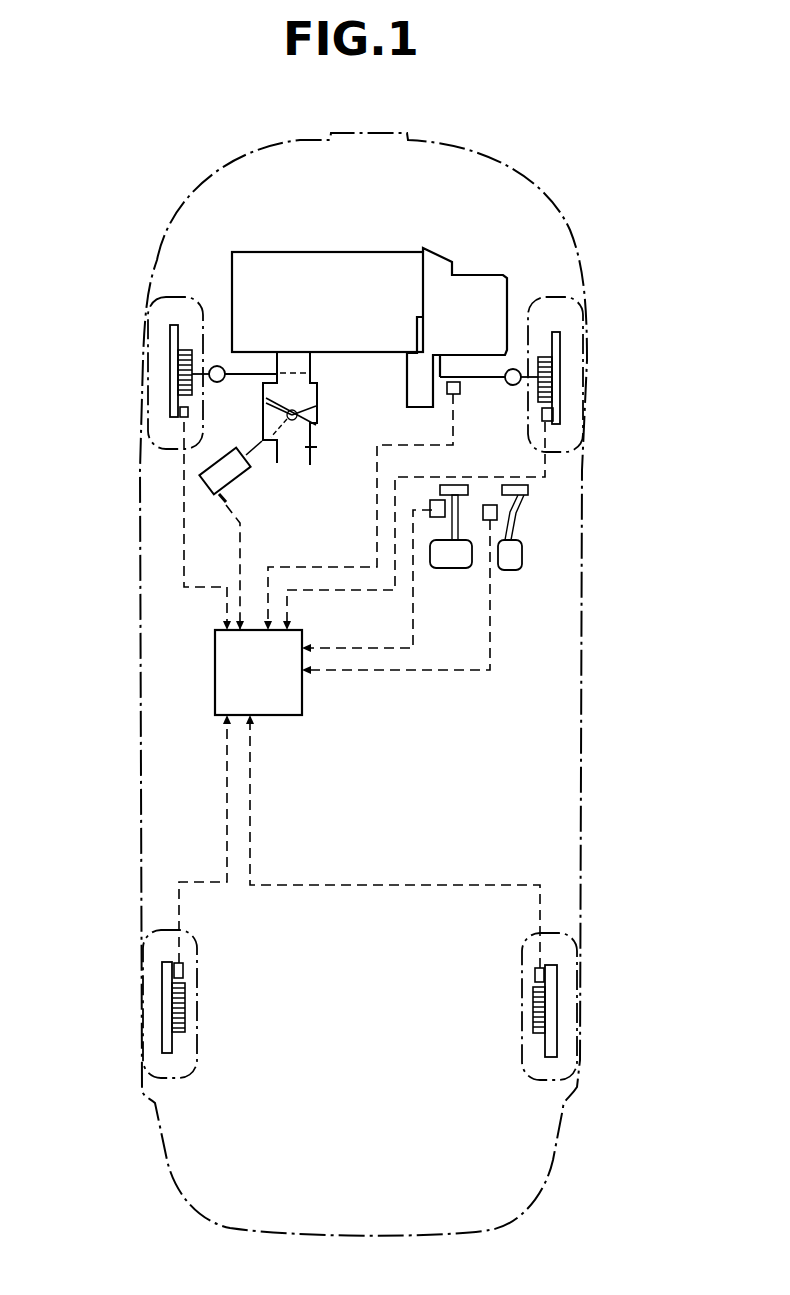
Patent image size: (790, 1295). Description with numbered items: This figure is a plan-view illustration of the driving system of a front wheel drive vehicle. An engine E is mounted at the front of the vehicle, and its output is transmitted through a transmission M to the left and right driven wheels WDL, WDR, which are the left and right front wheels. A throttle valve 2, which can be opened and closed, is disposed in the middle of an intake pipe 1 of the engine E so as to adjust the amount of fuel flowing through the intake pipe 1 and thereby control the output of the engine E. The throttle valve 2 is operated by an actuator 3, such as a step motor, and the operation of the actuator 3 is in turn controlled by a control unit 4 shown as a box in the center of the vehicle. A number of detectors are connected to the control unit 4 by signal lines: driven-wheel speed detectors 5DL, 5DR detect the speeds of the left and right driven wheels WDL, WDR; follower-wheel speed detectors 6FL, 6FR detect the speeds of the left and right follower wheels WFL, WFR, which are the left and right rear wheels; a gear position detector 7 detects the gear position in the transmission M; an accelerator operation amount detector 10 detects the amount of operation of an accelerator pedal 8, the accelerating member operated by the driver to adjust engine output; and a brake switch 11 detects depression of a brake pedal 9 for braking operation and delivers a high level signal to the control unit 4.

The intake pipe 1 is at (311, 457).
The throttle valve 2 is at (317, 404).
The actuator 3 is at (242, 472).
The control unit 4 is at (248, 691).
The driven-wheel speed detector 5DL is at (182, 420).
The driven-wheel speed detector 5DR is at (553, 411).
The follower-wheel speed detector 6FL is at (186, 972).
The follower-wheel speed detector 6FR is at (537, 975).
The gear position detector 7 is at (461, 387).
The accelerator pedal 8 is at (510, 553).
The brake pedal 9 is at (457, 562).
The accelerator operation amount detector 10 is at (498, 512).
The brake switch 11 is at (435, 500).
The engine E is at (299, 318).
The transmission M is at (472, 331).
The left driven wheel WDL is at (150, 355).
The right driven wheel WDR is at (582, 363).
The left follower wheel WFL is at (143, 1001).
The right follower wheel WFR is at (578, 982).